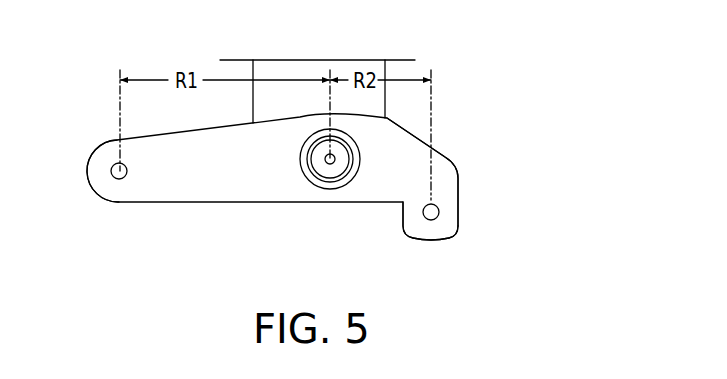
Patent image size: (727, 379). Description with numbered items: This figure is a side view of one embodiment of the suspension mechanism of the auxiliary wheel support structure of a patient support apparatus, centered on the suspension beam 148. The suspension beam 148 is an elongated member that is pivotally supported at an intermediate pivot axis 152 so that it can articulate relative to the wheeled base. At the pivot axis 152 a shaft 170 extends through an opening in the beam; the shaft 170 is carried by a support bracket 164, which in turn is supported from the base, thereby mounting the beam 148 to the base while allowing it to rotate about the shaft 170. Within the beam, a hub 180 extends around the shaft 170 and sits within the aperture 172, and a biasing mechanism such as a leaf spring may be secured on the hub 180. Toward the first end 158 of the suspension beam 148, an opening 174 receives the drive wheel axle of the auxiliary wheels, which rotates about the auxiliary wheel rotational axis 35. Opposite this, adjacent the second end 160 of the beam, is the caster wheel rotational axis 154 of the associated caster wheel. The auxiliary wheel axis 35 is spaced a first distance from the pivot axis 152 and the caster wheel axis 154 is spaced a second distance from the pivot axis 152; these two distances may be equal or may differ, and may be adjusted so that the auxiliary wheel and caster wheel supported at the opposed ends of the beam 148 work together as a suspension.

The suspension beam 148 is at (486, 104).
The first end of the suspension beam 158 is at (452, 177).
The second end of the suspension beam 160 is at (92, 182).
The caster wheel rotational axis 154 is at (112, 168).
The opening 174 is at (435, 221).
The auxiliary wheel rotational axis 35 is at (439, 212).
The aperture 172 is at (304, 167).
The shaft 170 is at (323, 181).
The pivot axis 152 is at (334, 162).
The hub 180 is at (316, 136).
The support bracket 164 is at (352, 60).